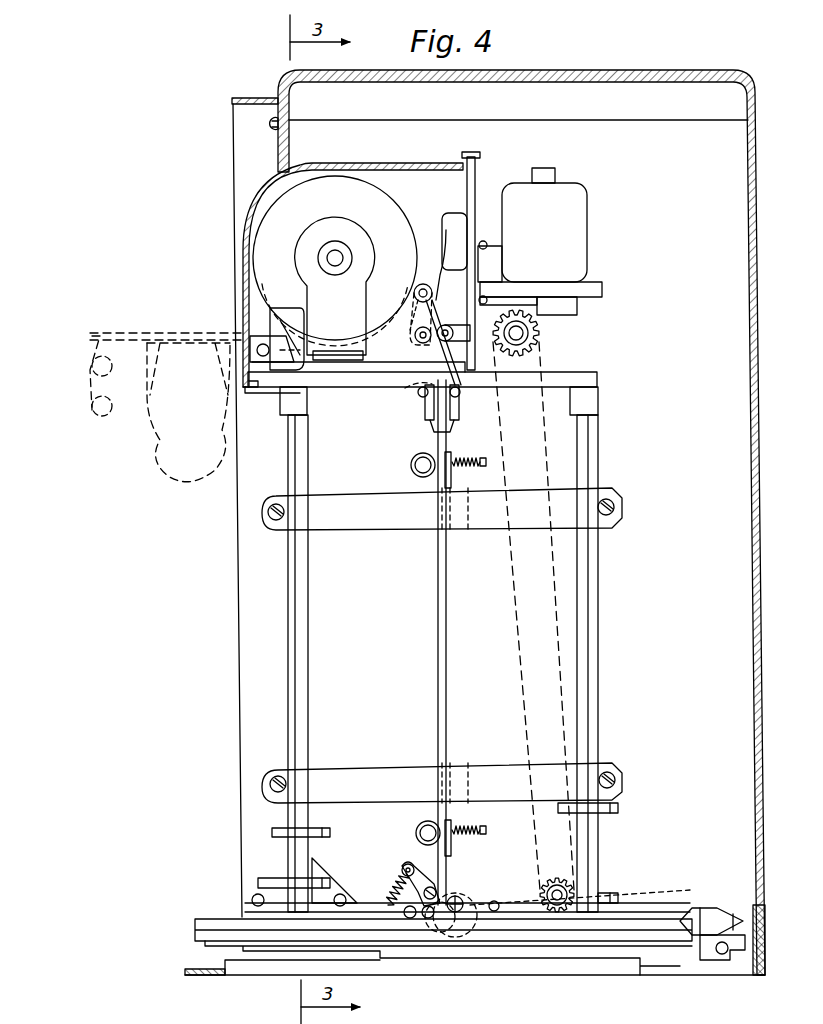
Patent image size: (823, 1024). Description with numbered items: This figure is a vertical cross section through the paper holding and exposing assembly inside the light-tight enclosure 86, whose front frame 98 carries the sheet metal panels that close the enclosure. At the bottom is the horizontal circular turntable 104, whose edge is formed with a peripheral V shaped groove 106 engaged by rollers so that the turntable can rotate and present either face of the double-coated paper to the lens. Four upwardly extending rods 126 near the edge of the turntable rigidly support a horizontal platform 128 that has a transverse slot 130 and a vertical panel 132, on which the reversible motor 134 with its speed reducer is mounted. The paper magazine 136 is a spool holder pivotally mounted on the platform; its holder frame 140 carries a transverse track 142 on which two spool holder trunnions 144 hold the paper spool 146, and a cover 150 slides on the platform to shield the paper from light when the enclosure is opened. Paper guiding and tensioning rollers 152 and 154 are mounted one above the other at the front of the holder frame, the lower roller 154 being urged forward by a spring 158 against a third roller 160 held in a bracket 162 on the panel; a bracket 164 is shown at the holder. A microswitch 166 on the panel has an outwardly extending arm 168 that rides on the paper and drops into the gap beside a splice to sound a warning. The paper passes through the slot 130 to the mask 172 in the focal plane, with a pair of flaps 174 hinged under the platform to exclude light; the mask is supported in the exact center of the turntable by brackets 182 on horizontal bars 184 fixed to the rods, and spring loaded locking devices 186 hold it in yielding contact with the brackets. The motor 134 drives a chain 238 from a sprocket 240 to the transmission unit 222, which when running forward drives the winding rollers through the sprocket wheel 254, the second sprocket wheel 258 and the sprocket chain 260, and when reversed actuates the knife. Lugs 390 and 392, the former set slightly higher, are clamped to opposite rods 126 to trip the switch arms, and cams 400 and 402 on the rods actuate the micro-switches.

The enclosure 86 is at (652, 62).
The front frame 98 is at (258, 98).
The turntable 104 is at (215, 918).
The peripheral V shaped groove 106 is at (196, 938).
The upwardly extending rods 126 is at (308, 633).
The horizontal platform 128 is at (600, 375).
The transverse slot 130 is at (418, 392).
The vertical panel 132 is at (474, 192).
The reversible motor 134 is at (575, 242).
The paper magazine 136 is at (412, 158).
The holder frame 140 is at (354, 366).
The transverse track 142 is at (338, 350).
The spool holder trunnions 144 is at (333, 250).
The paper spool 146 is at (400, 208).
The cover 150 is at (364, 163).
The paper guiding and tensioning roller 152 is at (421, 289).
The lower roller 154 is at (416, 331).
The spring 158 is at (416, 300).
The third roller 160 is at (450, 358).
The bracket 162 is at (466, 320).
The bracket 164 is at (283, 308).
The microswitch 166 is at (470, 216).
The outwardly extending arm 168 is at (470, 236).
The mask 172 is at (447, 594).
The flaps 174 is at (428, 416).
The brackets 182 is at (455, 528).
The horizontal bars 184 is at (346, 500).
The spring loaded locking devices 186 is at (413, 458).
The transmission unit 222 is at (572, 884).
The chain 238 is at (520, 631).
The drive sprocket 240 is at (541, 333).
The sprocket wheel 254 is at (554, 878).
The second sprocket wheel 258 is at (470, 888).
The sprocket chain 260 is at (545, 892).
The lug 390 is at (258, 882).
The lug 392 is at (620, 896).
The cam 400 is at (286, 832).
The cam 402 is at (620, 808).